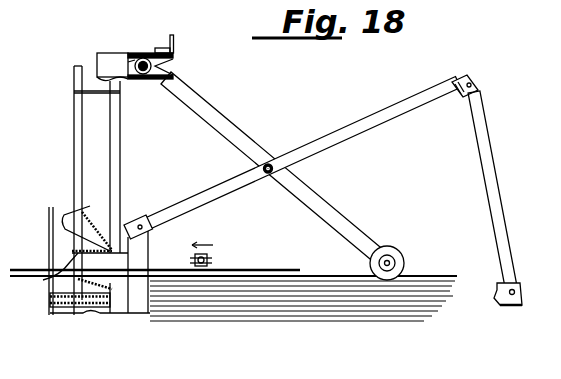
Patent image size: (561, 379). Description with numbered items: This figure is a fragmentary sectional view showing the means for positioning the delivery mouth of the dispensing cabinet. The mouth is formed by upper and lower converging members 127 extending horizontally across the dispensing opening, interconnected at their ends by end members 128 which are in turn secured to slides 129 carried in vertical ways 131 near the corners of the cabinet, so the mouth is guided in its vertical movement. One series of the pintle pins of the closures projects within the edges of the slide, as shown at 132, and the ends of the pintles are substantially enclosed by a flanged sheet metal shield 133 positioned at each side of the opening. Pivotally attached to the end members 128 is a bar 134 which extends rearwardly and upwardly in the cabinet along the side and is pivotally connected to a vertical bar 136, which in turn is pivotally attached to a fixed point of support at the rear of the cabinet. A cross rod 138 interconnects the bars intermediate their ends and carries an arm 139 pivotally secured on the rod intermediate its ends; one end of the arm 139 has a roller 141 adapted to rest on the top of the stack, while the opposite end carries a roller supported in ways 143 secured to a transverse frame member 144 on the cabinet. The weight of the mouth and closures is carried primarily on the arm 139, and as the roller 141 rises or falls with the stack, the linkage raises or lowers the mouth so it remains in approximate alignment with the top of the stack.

The converging members 127 is at (93, 297).
The end members 128 is at (143, 243).
The slides 129 is at (100, 228).
The vertical ways 131 is at (81, 138).
The pintle pin ends within slide edges 132 is at (103, 300).
The flanged sheet metal shield 133 is at (47, 287).
The bar 134 is at (403, 111).
The vertical bar 136 is at (483, 137).
The cross rod 138 is at (269, 175).
The arm 139 is at (238, 137).
The roller 141 is at (392, 247).
The ways 143 is at (174, 61).
The transverse frame member 144 is at (174, 46).